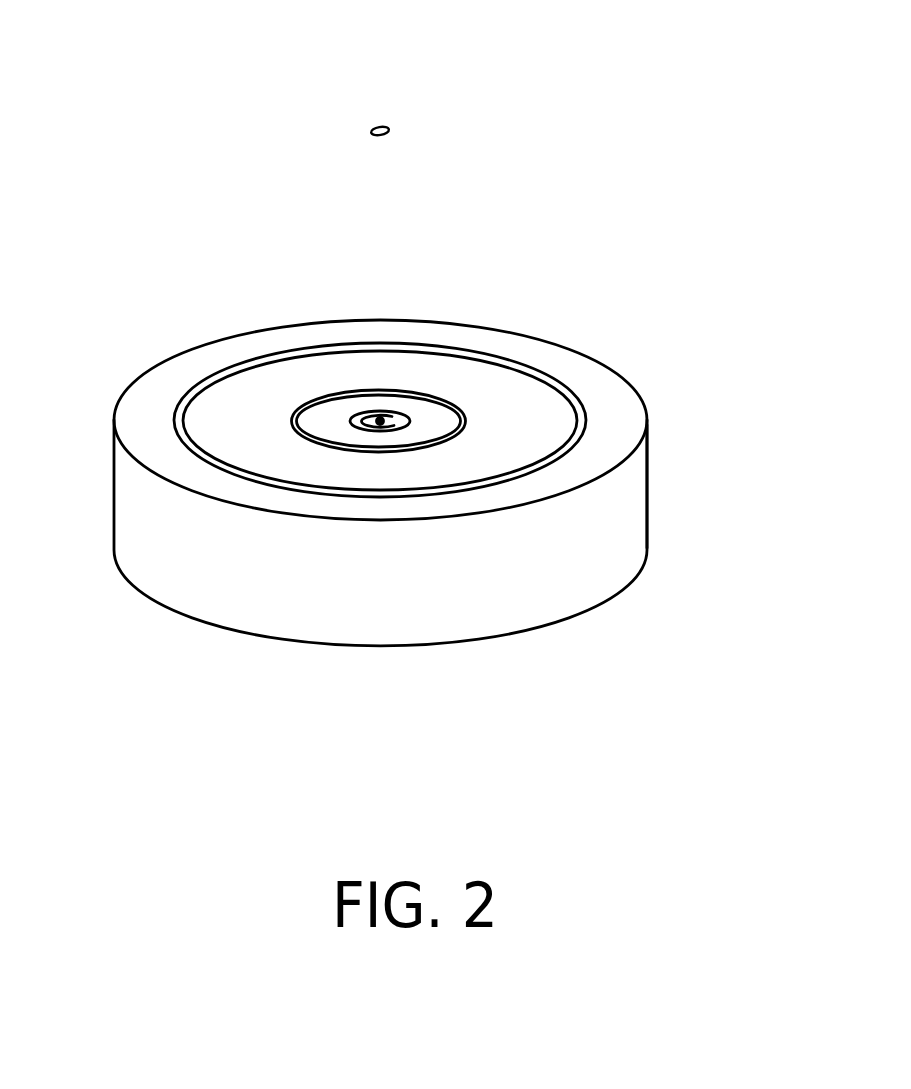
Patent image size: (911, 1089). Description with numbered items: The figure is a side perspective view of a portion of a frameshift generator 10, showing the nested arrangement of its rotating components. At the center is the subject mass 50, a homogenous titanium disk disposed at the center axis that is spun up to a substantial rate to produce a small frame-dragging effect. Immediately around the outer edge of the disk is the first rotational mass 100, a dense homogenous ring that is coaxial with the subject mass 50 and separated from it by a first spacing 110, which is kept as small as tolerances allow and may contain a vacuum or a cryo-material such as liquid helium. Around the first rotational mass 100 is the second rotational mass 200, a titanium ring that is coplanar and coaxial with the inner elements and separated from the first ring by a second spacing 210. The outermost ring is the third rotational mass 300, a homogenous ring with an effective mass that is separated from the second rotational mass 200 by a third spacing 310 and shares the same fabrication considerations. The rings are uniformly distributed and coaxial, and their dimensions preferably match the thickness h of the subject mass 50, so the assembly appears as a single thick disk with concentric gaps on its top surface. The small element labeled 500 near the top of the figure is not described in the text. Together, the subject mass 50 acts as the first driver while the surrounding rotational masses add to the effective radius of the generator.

The frameshift generator 10 is at (96, 68).
The subject mass 50 is at (397, 413).
The first rotational mass 100 is at (440, 417).
The first spacing 110 is at (410, 418).
The second rotational mass 200 is at (552, 422).
The second spacing 210 is at (463, 421).
The third rotational mass 300 is at (615, 435).
The third spacing 310 is at (590, 422).
The reference point / particle 500 is at (388, 131).
The thickness h is at (648, 507).